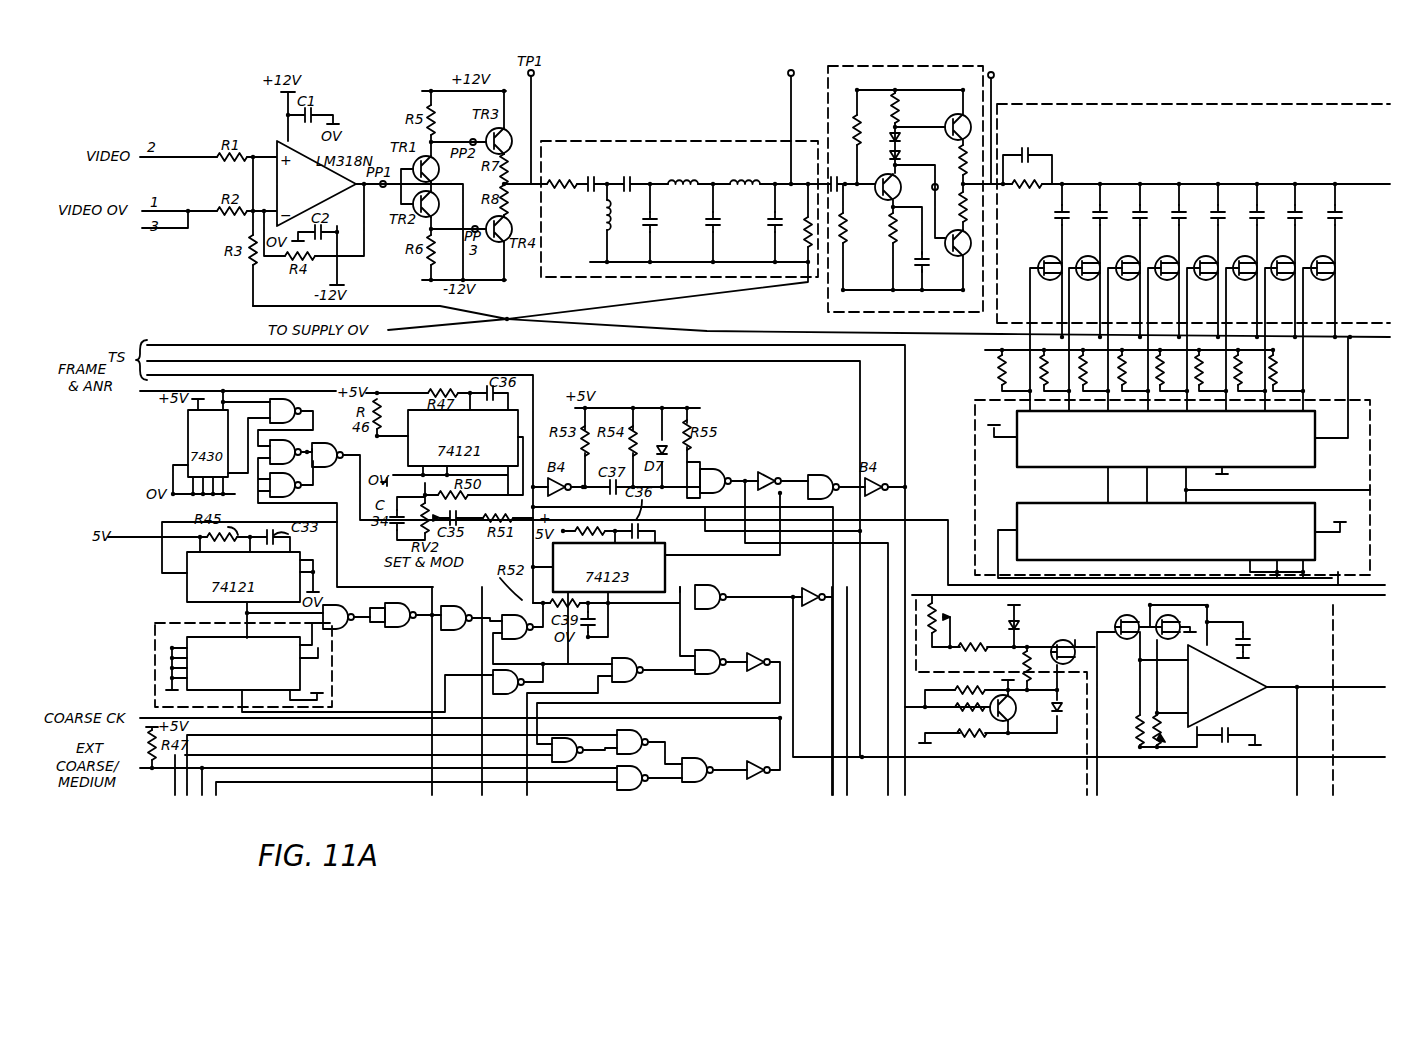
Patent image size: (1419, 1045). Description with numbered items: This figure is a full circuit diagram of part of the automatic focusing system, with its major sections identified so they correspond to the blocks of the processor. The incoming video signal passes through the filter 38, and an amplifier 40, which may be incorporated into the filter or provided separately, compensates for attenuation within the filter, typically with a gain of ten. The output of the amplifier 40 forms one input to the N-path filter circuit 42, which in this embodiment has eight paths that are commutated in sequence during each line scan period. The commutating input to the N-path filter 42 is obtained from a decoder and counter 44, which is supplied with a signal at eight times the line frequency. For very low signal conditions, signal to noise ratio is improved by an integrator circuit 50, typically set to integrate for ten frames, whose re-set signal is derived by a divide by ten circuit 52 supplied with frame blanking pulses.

The filter 38 is at (650, 141).
The amplifier 40 is at (882, 66).
The N-path filter circuit 42 is at (1104, 104).
The decoder and counter 44 is at (972, 436).
The integrator circuit 50 is at (1333, 660).
The divide by 10 circuit 52 is at (153, 632).